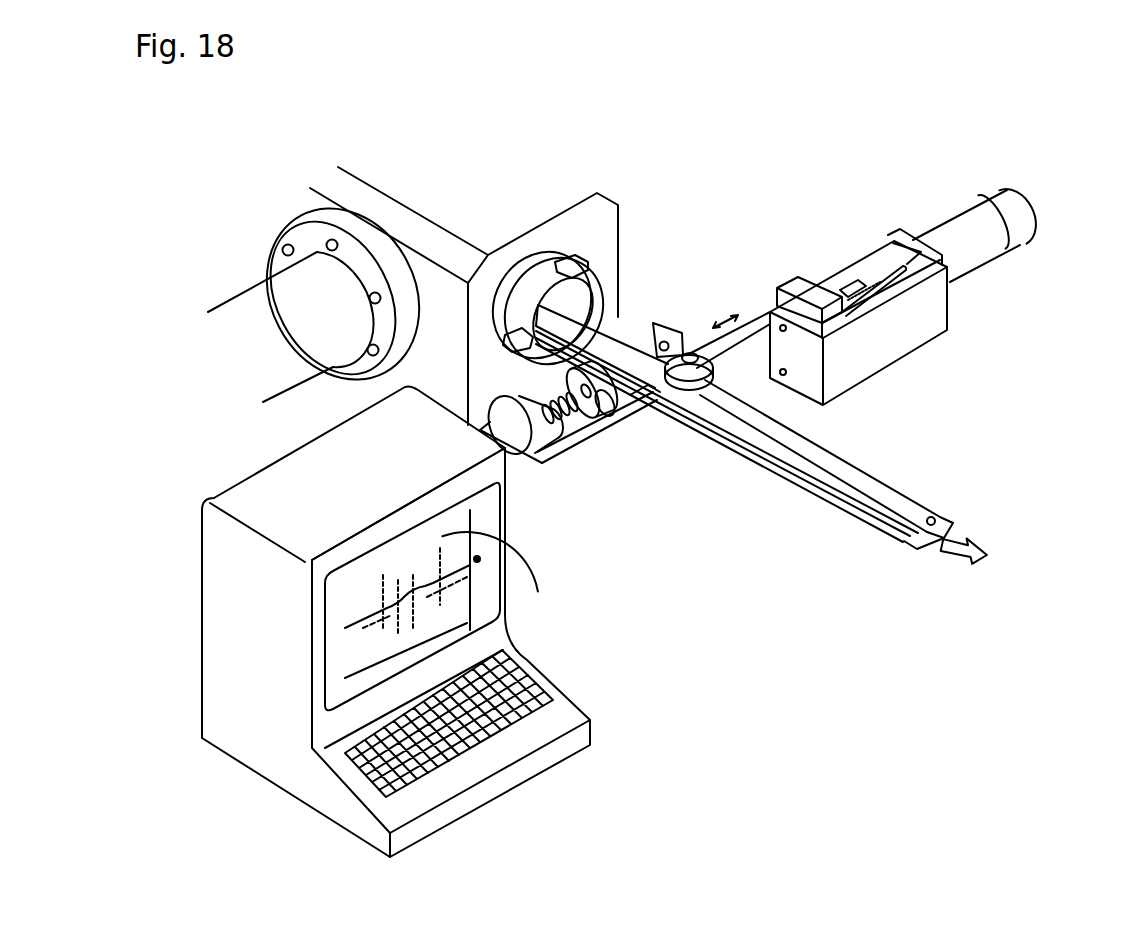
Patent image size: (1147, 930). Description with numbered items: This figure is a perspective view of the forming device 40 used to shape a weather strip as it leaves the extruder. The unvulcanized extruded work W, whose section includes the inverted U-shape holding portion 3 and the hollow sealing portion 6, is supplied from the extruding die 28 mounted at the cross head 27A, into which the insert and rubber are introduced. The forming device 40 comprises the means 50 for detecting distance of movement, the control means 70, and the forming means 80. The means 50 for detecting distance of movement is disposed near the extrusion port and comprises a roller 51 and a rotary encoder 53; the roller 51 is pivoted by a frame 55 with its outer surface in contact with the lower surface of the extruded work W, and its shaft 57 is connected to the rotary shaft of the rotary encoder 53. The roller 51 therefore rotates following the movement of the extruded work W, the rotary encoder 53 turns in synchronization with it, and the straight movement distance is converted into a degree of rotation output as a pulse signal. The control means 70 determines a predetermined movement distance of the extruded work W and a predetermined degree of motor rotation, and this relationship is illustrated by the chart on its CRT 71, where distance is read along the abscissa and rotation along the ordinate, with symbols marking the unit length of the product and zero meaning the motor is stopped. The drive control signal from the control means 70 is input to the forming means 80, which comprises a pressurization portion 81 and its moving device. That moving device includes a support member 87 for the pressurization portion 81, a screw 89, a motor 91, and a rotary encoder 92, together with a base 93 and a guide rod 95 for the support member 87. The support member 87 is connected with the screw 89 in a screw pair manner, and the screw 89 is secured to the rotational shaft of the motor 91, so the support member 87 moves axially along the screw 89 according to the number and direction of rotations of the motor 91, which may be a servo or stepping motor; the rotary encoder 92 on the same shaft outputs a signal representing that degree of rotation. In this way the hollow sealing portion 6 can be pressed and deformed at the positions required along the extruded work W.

The cross head 27A is at (552, 164).
The extruding die 28 is at (590, 258).
The extruded work W is at (608, 312).
The inverted U-shape holding portion 3 is at (900, 547).
The hollow sealing portion 6 is at (917, 512).
The means for detecting distance of movement 50 is at (595, 454).
The roller 51 is at (593, 418).
The rotary encoder 53 is at (520, 455).
The frame 55 is at (670, 431).
The shaft 57 is at (570, 380).
The control means 70 is at (397, 621).
The CRT 71 is at (540, 588).
The forming device 40 is at (894, 253).
The forming means 80 is at (844, 253).
The pressurization portion 81 is at (730, 378).
The support member 87 is at (797, 275).
The screw 89 is at (858, 290).
The motor 91 is at (948, 233).
The rotary encoder 92 is at (1000, 205).
The base 93 is at (903, 343).
The guide rod 95 is at (885, 263).